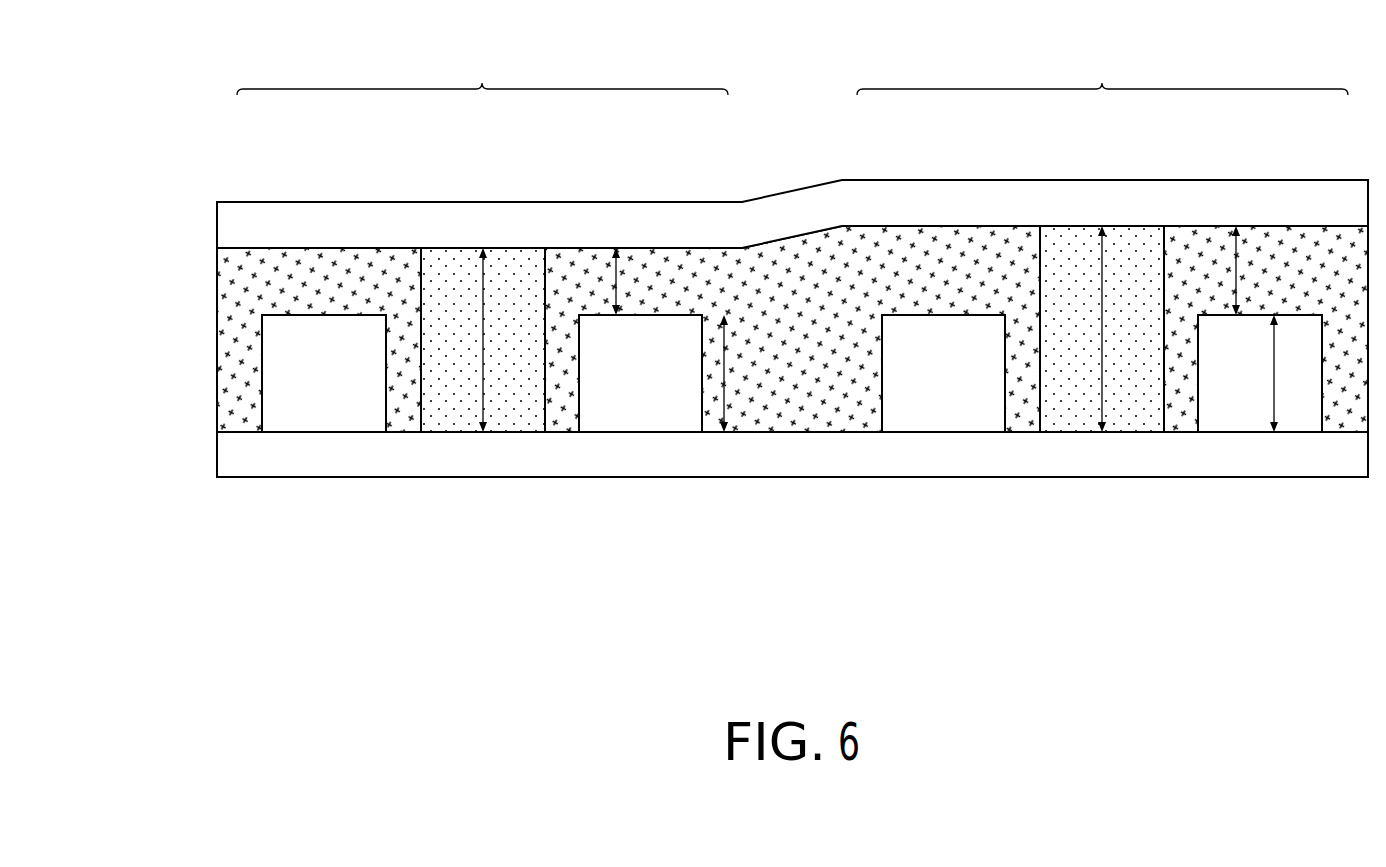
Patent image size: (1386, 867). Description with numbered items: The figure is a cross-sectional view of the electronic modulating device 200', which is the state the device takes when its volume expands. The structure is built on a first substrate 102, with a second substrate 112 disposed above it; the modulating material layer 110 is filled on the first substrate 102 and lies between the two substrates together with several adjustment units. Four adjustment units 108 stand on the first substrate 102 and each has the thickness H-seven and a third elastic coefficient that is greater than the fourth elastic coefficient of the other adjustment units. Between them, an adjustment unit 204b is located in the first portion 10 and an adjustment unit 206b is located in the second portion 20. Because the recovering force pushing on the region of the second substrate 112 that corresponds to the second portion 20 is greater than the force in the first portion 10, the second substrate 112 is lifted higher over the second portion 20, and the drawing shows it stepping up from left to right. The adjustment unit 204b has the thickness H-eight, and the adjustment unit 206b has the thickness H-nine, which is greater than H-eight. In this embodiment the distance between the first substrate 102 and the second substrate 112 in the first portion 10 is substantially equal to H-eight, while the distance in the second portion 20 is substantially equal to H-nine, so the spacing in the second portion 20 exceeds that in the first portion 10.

The electronic modulating device 200' is at (733, 292).
The first portion 10 is at (482, 74).
The second portion 20 is at (1102, 74).
The first substrate 102 is at (232, 453).
The adjustment unit 108 is at (323, 421).
The modulating material layer 110 is at (248, 421).
The second substrate 112 is at (232, 222).
The adjustment unit 204b is at (455, 421).
The adjustment unit 206b is at (1074, 421).